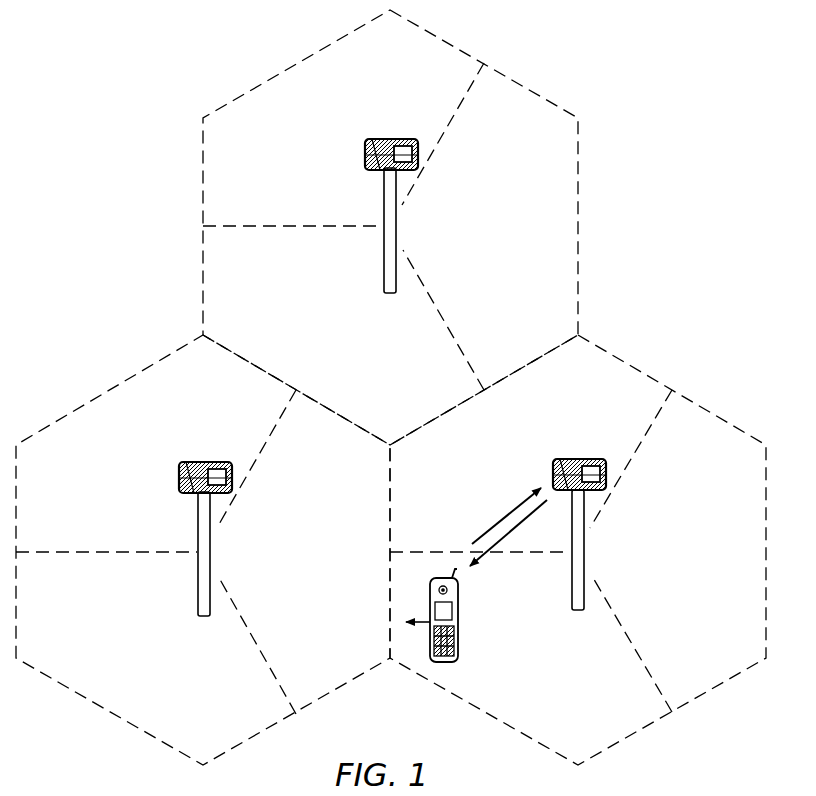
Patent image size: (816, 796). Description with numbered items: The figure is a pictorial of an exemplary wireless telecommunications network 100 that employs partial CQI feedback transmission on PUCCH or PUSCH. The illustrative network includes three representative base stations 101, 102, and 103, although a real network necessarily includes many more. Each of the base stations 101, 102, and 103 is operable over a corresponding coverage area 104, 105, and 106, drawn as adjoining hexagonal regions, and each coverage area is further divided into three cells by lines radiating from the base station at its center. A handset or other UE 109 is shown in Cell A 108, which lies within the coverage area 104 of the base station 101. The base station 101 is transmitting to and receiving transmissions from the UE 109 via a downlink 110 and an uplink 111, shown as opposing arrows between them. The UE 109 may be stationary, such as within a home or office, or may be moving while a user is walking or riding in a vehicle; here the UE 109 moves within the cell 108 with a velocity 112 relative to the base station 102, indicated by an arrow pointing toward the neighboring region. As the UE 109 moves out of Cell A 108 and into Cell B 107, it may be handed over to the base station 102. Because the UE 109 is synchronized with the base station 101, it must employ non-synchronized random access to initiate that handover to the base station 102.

The wireless telecommunications network 100 is at (102, 91).
The base station 101 is at (586, 549).
The base station 102 is at (198, 582).
The base station 103 is at (383, 256).
The coverage area 104 is at (707, 690).
The coverage area 105 is at (113, 712).
The coverage area 106 is at (580, 226).
The Cell B 107 is at (347, 657).
The Cell A 108 is at (586, 722).
The UE 109 is at (460, 630).
The downlink 110 is at (510, 548).
The uplink 111 is at (514, 506).
The velocity 112 is at (421, 624).